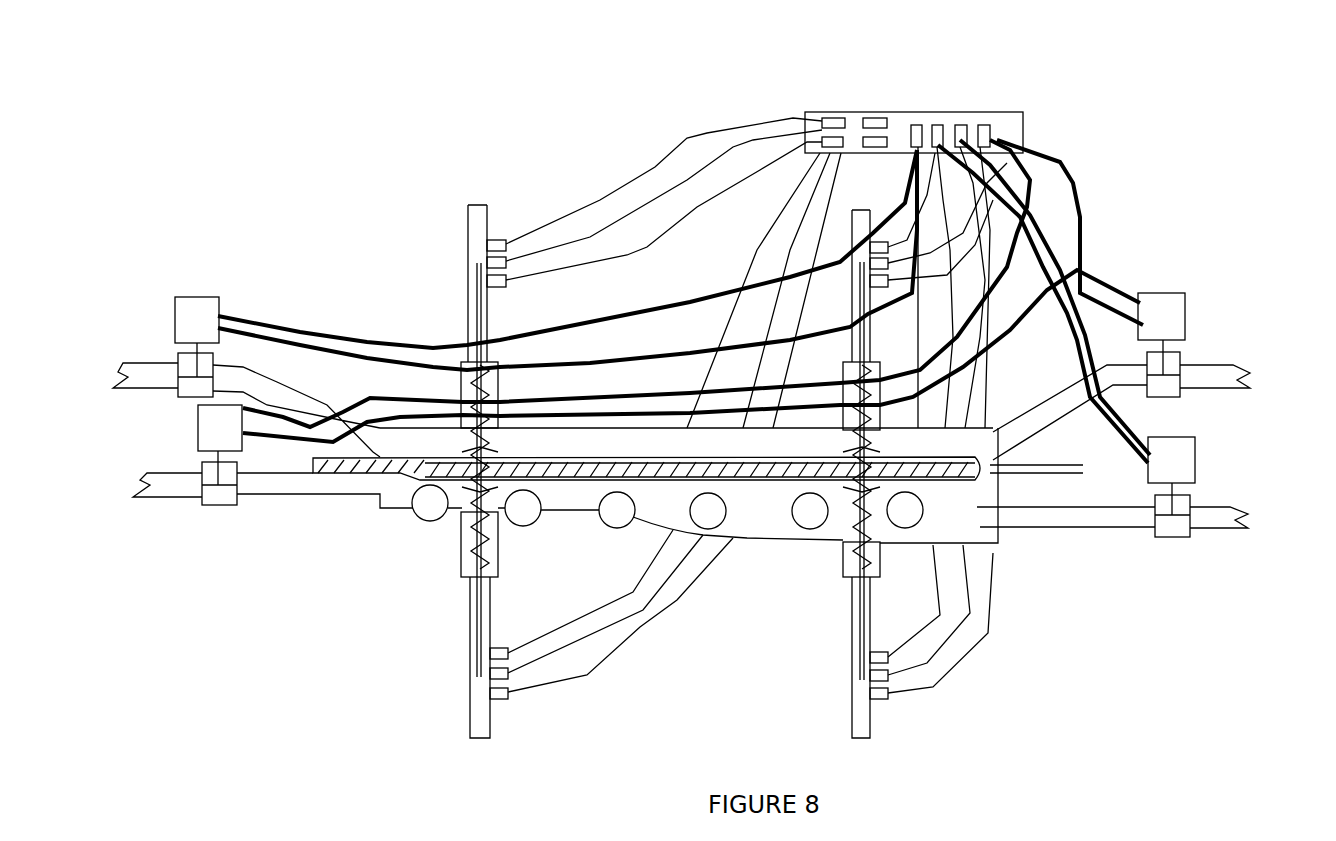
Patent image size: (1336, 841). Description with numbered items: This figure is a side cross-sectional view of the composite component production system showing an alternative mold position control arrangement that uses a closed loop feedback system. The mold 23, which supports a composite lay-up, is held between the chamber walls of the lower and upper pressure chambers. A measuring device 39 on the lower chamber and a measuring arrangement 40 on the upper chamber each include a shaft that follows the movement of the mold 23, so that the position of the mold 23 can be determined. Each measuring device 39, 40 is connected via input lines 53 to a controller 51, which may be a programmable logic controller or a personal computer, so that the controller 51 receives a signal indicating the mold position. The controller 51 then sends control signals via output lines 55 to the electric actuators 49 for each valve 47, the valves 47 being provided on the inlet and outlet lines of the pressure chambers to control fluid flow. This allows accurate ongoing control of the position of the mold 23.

The mold 23 is at (780, 482).
The measuring device 39 is at (447, 701).
The measuring arrangement 40 is at (458, 258).
The valve 47 is at (178, 395).
The electric actuator 49 is at (175, 297).
The controller 51 is at (925, 101).
The input lines 53 is at (692, 135).
The output lines 55 is at (302, 304).